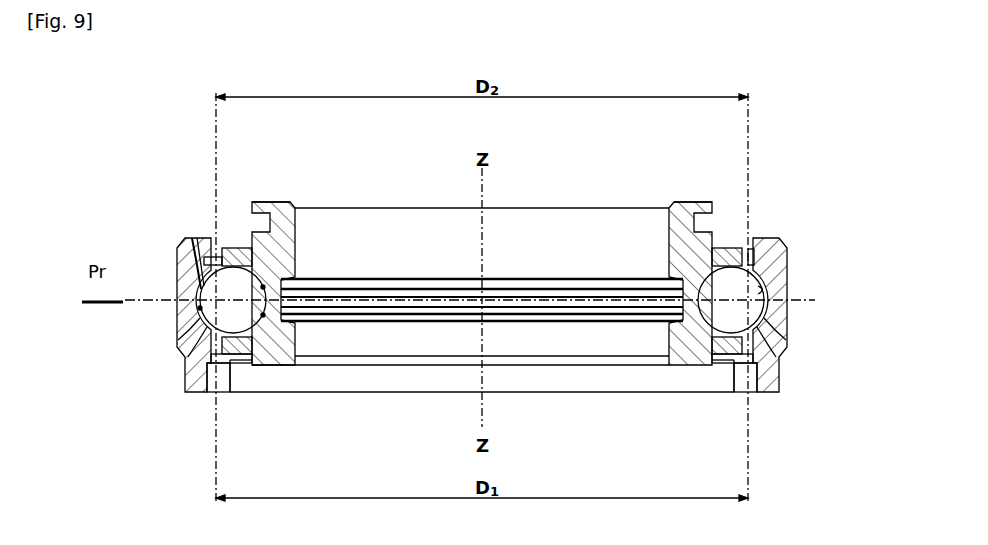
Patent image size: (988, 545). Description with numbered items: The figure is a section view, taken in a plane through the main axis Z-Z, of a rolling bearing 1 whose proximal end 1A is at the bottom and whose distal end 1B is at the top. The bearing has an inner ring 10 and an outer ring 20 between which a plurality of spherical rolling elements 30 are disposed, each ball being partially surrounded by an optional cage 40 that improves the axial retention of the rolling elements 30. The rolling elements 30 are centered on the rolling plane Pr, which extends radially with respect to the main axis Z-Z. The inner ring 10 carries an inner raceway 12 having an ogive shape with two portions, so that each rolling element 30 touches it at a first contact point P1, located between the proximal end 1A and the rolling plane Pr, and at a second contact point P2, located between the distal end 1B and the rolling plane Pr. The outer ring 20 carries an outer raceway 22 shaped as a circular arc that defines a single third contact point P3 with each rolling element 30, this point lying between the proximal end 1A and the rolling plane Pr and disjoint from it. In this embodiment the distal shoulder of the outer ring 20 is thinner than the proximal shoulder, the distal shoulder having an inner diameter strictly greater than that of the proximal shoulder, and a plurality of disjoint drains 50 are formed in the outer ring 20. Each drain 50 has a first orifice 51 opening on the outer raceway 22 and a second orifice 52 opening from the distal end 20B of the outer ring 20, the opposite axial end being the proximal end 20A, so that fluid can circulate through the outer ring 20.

The rolling bearing 1 is at (801, 177).
The proximal end 1A is at (196, 404).
The distal end 1B is at (271, 196).
The inner ring 10 is at (678, 237).
The inner raceway 12 is at (264, 365).
The outer ring 20 is at (778, 271).
The proximal end of the outer ring 20A is at (765, 393).
The distal end of the outer ring 20B is at (690, 202).
The outer raceway 22 is at (180, 347).
The rolling element 30 is at (748, 313).
The cage 40 is at (726, 354).
The drain 50 is at (195, 261).
The first orifice 51 is at (198, 289).
The second orifice 52 is at (193, 243).
The first contact point P1 is at (263, 315).
The second contact point P2 is at (263, 287).
The third contact point P3 is at (200, 308).